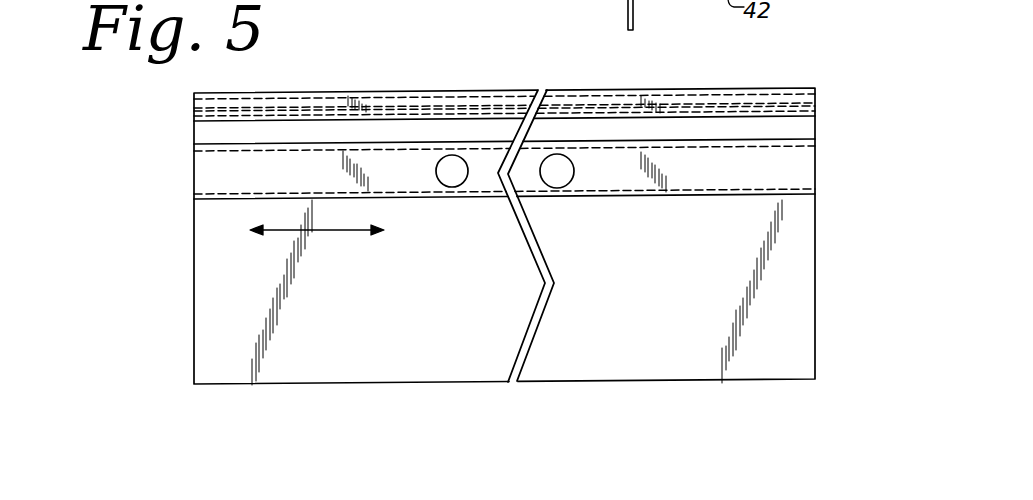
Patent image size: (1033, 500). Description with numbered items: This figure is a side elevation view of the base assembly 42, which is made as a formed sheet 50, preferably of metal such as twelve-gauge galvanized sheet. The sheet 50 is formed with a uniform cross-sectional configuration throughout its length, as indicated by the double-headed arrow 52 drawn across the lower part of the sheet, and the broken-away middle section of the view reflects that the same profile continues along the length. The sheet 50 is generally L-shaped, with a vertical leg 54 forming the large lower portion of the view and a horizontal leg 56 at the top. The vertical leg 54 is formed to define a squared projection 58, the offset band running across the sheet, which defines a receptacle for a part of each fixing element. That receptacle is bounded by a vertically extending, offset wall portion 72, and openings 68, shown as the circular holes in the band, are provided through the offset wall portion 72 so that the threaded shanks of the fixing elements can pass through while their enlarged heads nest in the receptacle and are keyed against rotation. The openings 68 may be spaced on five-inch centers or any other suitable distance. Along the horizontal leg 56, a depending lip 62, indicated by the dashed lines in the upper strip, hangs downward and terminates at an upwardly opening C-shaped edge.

The base assembly 42 is at (387, 309).
The formed sheet 50 is at (622, 306).
The double-headed arrow 52 is at (340, 231).
The vertical leg 54 is at (217, 357).
The horizontal leg 56 is at (318, 92).
The squared projection 58 is at (208, 177).
The depending lip 62 is at (203, 107).
The openings 68 is at (448, 157).
The offset wall portion 72 is at (787, 170).